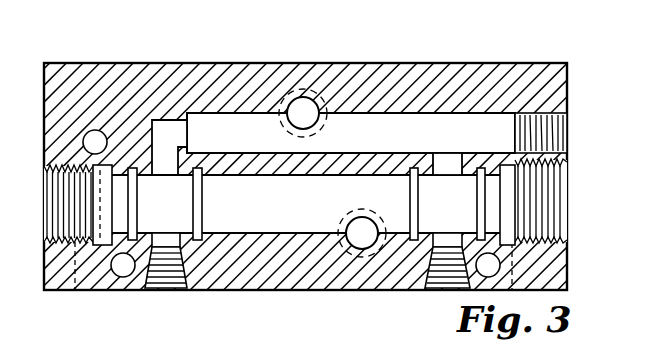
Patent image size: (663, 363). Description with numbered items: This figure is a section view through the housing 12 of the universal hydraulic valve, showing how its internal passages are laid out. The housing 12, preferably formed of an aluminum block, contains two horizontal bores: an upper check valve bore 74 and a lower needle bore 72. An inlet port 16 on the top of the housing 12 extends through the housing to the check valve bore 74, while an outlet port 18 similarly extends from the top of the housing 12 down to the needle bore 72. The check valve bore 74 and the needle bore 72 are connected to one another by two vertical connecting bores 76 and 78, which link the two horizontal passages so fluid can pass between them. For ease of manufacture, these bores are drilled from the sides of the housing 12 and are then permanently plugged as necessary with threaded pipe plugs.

The housing 12 is at (420, 80).
The inlet port 16 is at (310, 88).
The outlet port 18 is at (361, 258).
The needle bore 72 is at (292, 208).
The check valve bore 74 is at (362, 125).
The vertical connecting bore 76 is at (452, 152).
The vertical connecting bore 78 is at (163, 150).